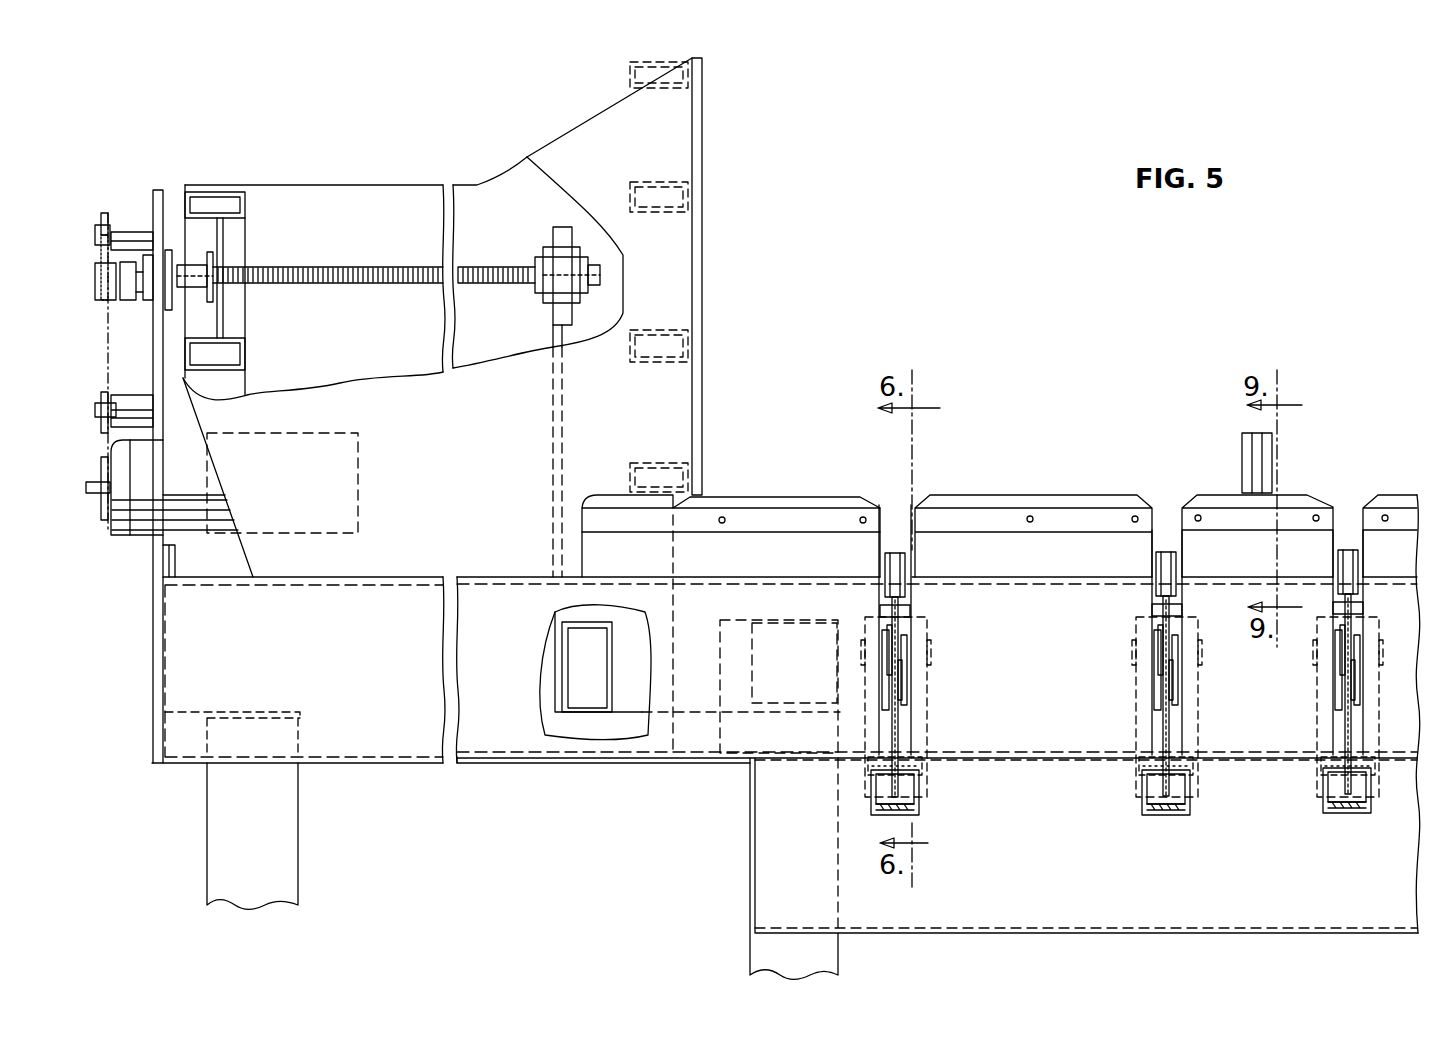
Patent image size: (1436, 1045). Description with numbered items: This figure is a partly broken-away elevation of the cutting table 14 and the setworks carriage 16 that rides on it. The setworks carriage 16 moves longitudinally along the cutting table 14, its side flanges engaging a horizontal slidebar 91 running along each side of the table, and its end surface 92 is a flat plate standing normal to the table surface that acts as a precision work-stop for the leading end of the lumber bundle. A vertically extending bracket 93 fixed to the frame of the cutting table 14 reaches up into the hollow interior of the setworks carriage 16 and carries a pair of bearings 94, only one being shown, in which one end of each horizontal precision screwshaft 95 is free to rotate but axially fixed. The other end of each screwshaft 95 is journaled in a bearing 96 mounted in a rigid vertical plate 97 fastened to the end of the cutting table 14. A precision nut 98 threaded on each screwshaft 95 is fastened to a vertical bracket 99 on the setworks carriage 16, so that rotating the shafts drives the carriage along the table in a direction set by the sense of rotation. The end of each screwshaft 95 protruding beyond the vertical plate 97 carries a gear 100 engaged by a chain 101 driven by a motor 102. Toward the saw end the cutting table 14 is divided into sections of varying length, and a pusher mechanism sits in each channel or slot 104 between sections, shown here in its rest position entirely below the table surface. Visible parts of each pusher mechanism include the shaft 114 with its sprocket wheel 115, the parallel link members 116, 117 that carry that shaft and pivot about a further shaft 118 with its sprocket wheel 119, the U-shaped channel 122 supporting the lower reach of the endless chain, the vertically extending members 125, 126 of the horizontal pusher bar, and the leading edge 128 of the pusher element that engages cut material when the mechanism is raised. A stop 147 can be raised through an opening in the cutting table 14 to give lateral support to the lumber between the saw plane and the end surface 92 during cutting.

The cutting table 14 is at (370, 672).
The setworks carriage 16 is at (396, 184).
The horizontal slidebar 91 is at (766, 520).
The end surface 92 is at (704, 136).
The bracket 93 is at (553, 330).
The bearing 94 is at (560, 235).
The screwshaft 95 is at (385, 267).
The bearing 96 is at (127, 297).
The vertical plate 97 is at (162, 378).
The precision nut 98 is at (190, 265).
The vertical bracket 99 is at (224, 240).
The gear 100 is at (100, 283).
The chain 101 is at (104, 371).
The motor 102 is at (120, 536).
The channel or slot 104 is at (890, 505).
The shaft 114 is at (1136, 655).
The sprocket wheel 115 is at (1158, 630).
The link member 116 is at (1180, 690).
The link member 117 is at (1156, 690).
The shaft 118 is at (1139, 770).
The sprocket wheel 119 is at (1163, 722).
The U-shaped channel 122 is at (1178, 815).
The vertically extending member 125 is at (1172, 610).
The vertically extending member 126 is at (1152, 610).
The leading edge 128 is at (1166, 570).
The stop 147 is at (1242, 456).